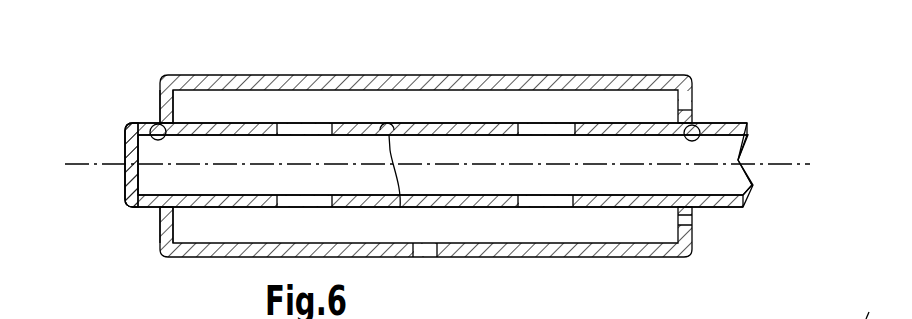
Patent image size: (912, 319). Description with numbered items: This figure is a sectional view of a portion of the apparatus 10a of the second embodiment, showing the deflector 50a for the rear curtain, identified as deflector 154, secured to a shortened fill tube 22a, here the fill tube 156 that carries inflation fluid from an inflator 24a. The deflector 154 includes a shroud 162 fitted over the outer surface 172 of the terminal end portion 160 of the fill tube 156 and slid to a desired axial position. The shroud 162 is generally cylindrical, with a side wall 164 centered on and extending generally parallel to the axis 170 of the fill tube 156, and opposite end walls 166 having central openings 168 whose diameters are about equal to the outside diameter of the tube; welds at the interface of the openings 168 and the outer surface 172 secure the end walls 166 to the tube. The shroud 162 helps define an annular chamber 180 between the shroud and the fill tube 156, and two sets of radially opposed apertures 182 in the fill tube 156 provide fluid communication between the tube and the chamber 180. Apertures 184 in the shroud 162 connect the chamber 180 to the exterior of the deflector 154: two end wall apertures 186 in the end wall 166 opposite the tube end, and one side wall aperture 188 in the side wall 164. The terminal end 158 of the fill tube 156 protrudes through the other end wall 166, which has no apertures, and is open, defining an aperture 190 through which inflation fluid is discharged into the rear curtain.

The apparatus 10a is at (224, 50).
The deflector 50a is at (426, 152).
The deflector 154 is at (426, 152).
The shroud 162 is at (426, 152).
The side wall 164 is at (301, 54).
The end walls 166 is at (160, 93).
The apertures 184 is at (475, 267).
The end wall apertures 186 is at (700, 124).
The side wall aperture 188 is at (425, 249).
The central openings 168 is at (165, 128).
The terminal end portion 160 is at (452, 146).
The shortened fill tube 22a is at (452, 146).
The fill tube 156 is at (414, 132).
The terminal end 158 is at (99, 195).
The aperture 190 is at (138, 197).
The apertures 182 is at (284, 128).
The outer surface 172 is at (400, 177).
The annular chamber 180 is at (582, 223).
The axis 170 is at (800, 158).
The inflator 24a is at (872, 305).